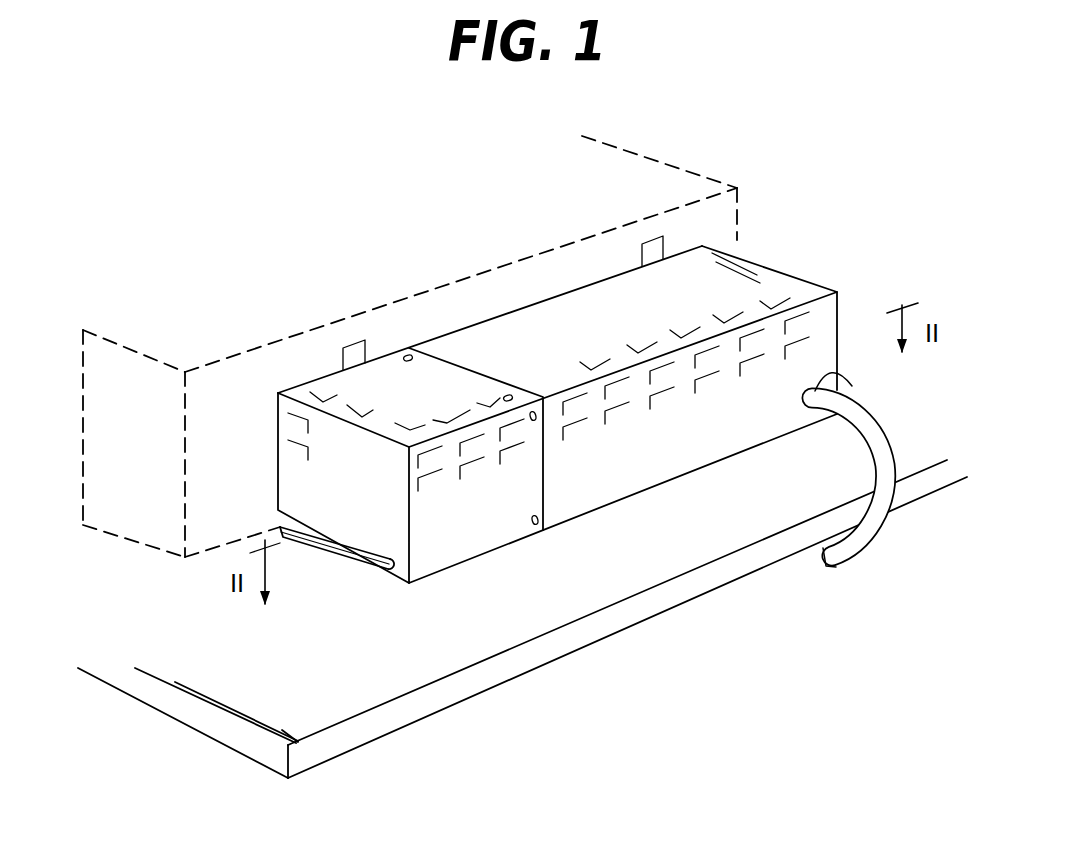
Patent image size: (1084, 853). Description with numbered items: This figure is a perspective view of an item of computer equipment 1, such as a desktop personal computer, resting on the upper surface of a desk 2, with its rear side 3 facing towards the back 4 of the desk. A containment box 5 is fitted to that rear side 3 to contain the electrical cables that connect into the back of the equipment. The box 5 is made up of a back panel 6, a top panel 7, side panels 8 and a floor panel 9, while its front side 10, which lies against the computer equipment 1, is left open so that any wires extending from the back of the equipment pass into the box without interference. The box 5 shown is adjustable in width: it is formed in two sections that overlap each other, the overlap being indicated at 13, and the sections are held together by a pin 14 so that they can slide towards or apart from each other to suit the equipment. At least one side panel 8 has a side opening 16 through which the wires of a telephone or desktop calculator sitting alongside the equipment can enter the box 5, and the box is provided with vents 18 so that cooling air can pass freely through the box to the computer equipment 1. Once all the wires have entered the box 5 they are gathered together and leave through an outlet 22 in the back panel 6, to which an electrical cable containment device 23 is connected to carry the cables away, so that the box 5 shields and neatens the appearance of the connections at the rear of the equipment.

The computer equipment 1 is at (679, 163).
The desk 2 is at (246, 698).
The rear side 3 is at (542, 275).
The back of the desk 4 is at (543, 653).
The containment box 5 is at (770, 262).
The back panel 6 is at (823, 323).
The top panel 7 is at (737, 283).
The side panels 8 is at (288, 477).
The floor panel 9 is at (335, 538).
The front side 10 is at (482, 320).
The overlap 13 is at (532, 478).
The pin 14 is at (538, 530).
The side opening 16 is at (366, 556).
The vents 18 is at (298, 428).
The outlet 22 is at (843, 381).
The electrical cable containment device 23 is at (857, 540).